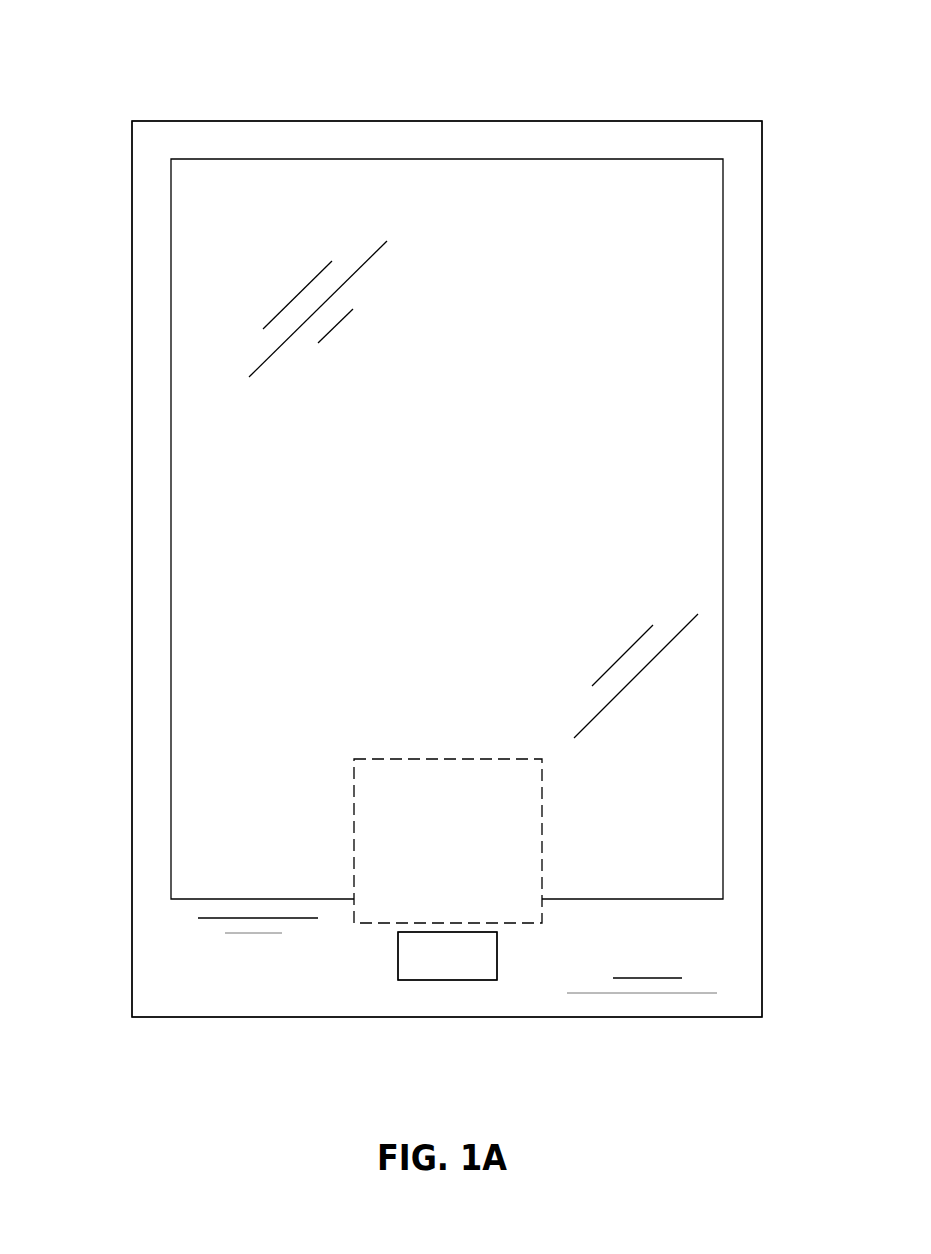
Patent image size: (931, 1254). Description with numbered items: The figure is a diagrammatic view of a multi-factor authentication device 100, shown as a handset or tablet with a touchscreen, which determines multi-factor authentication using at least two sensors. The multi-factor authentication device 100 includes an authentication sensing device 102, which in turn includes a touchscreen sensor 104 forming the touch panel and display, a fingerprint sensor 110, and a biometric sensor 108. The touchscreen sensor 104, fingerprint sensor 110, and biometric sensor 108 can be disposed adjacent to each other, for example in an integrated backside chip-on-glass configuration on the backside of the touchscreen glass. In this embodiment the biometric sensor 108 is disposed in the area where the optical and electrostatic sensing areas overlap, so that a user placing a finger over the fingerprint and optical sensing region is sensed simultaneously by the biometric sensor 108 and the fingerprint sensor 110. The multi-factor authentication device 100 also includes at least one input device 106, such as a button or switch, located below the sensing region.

The multi-factor authentication device 100 is at (143, 62).
The authentication sensing device 102 is at (750, 257).
The touchscreen sensor 104 is at (678, 497).
The input device 106 is at (475, 970).
The biometric sensor 108 is at (427, 932).
The fingerprint sensor 110 is at (508, 873).